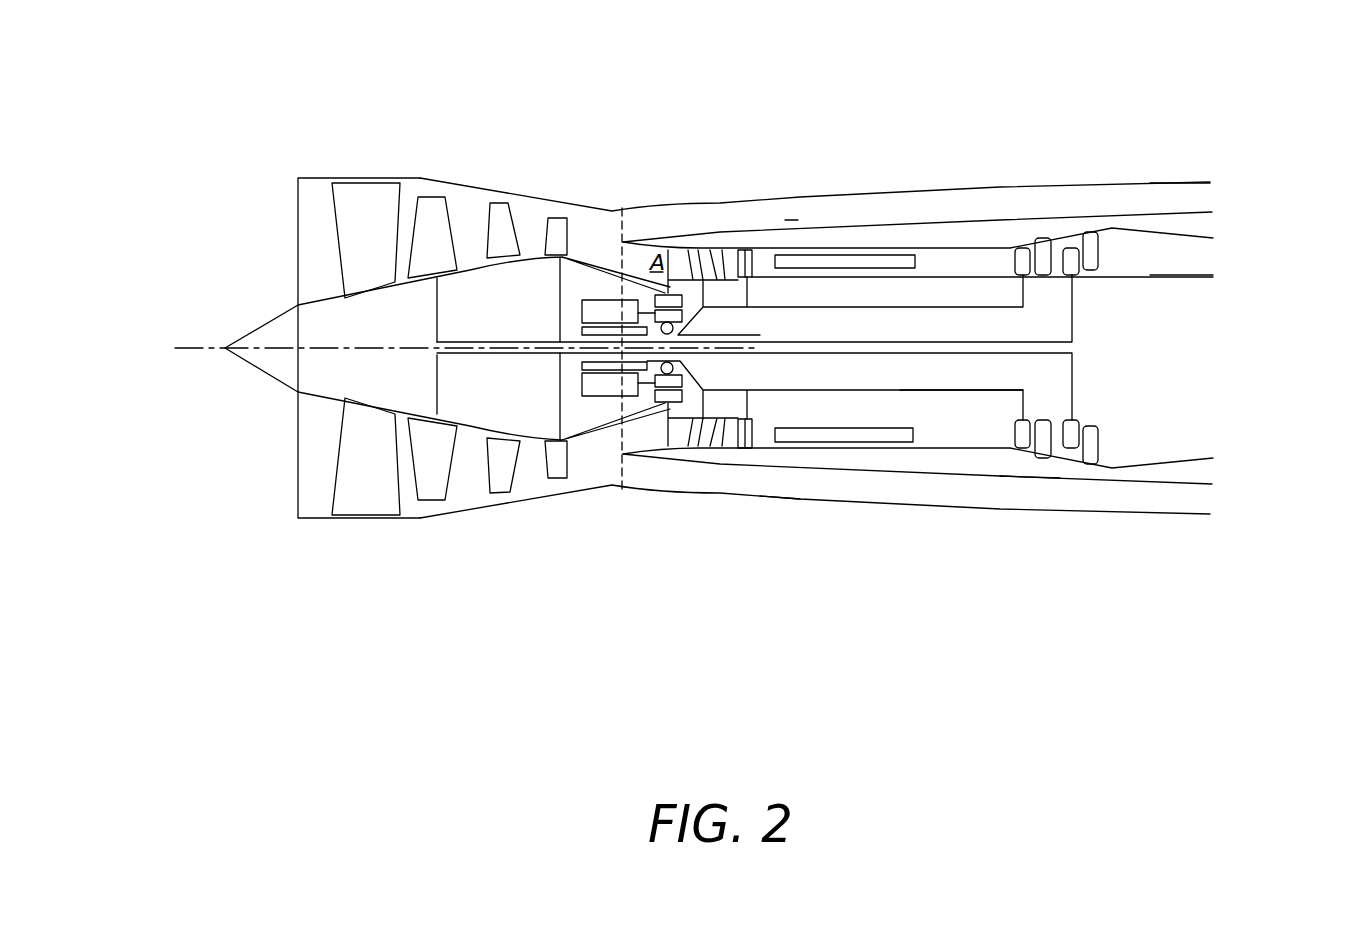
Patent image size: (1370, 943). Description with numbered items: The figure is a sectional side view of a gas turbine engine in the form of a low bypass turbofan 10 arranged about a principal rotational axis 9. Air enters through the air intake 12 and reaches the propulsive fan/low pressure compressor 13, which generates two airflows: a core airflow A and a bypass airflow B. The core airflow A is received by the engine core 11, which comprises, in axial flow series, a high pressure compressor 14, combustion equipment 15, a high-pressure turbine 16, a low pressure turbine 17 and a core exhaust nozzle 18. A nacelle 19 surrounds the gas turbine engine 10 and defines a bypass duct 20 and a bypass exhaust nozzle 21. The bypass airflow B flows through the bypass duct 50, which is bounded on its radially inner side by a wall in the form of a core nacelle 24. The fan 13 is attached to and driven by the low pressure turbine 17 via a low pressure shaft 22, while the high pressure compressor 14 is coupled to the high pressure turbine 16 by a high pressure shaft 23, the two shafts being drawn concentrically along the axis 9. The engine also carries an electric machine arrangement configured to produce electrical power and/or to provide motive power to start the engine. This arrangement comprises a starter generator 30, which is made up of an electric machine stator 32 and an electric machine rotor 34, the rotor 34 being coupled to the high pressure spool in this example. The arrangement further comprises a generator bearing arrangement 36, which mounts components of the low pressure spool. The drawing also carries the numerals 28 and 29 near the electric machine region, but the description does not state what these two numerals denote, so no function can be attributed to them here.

The principal rotational axis 9 is at (272, 322).
The low bypass turbofan 10 is at (787, 128).
The core 11 is at (735, 218).
The air intake 12 is at (300, 205).
The propulsive fan/low pressure compressor 13 is at (523, 525).
The high pressure compressor 14 is at (702, 483).
The combustion equipment 15 is at (863, 252).
The high-pressure turbine 16 is at (1020, 247).
The low pressure turbine 17 is at (1068, 247).
The core exhaust nozzle 18 is at (1200, 258).
The nacelle 19 is at (945, 188).
The bypass duct 20 is at (812, 483).
The bypass exhaust nozzle 21 is at (1193, 195).
The low pressure shaft 22 is at (840, 340).
The high pressure shaft 23 is at (960, 390).
The core nacelle 24 is at (1032, 478).
The gearbox input 28 is at (568, 375).
The low pressure shaft 29 is at (583, 333).
The starter generator 30 is at (583, 283).
The electric machine stator 32 is at (602, 300).
The electric machine rotor 34 is at (605, 372).
The generator bearing arrangement 36 is at (682, 418).
The bypass duct 50 is at (836, 220).